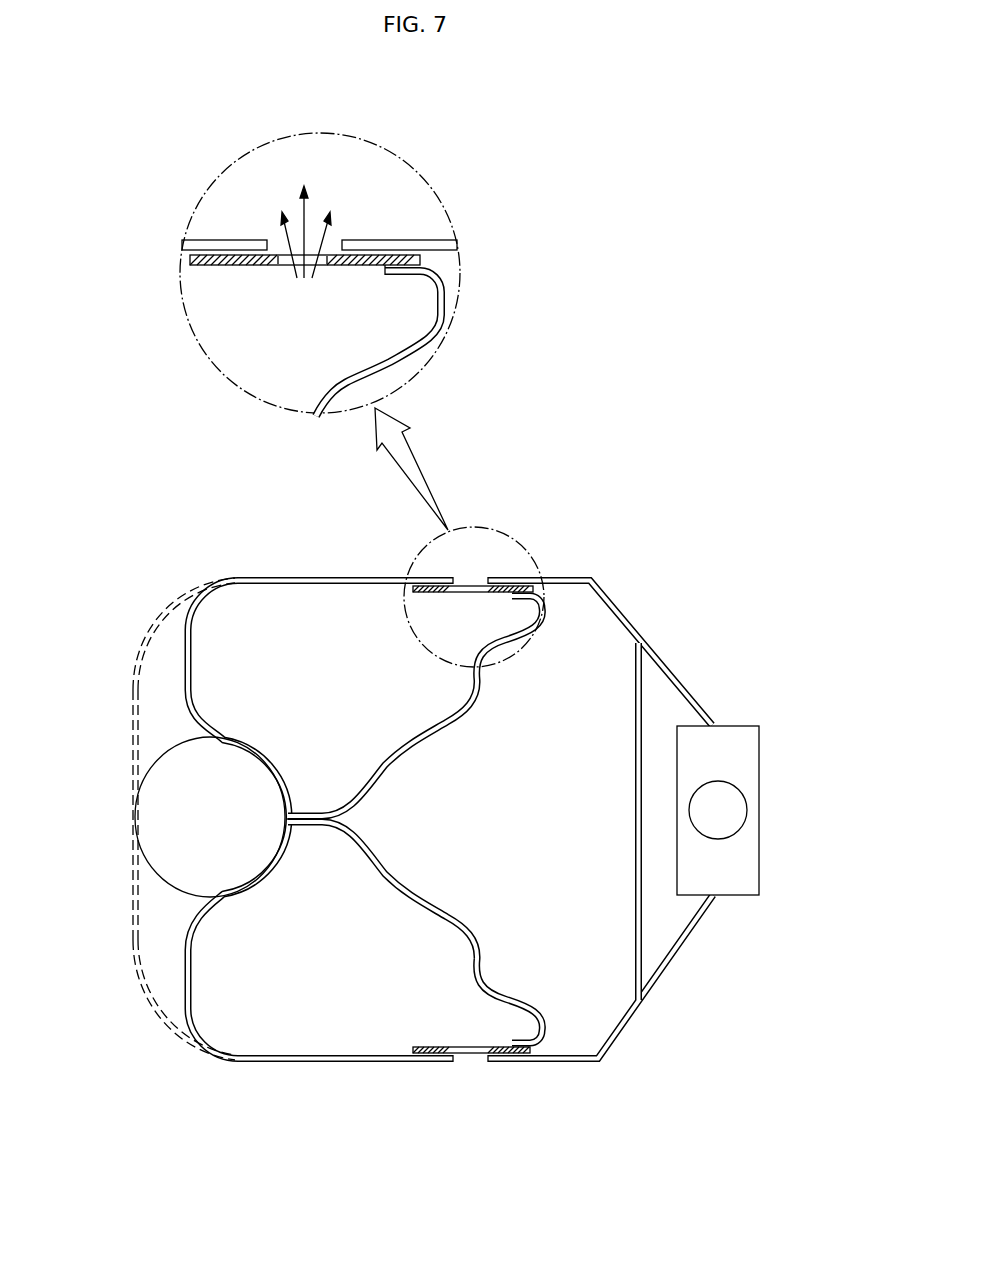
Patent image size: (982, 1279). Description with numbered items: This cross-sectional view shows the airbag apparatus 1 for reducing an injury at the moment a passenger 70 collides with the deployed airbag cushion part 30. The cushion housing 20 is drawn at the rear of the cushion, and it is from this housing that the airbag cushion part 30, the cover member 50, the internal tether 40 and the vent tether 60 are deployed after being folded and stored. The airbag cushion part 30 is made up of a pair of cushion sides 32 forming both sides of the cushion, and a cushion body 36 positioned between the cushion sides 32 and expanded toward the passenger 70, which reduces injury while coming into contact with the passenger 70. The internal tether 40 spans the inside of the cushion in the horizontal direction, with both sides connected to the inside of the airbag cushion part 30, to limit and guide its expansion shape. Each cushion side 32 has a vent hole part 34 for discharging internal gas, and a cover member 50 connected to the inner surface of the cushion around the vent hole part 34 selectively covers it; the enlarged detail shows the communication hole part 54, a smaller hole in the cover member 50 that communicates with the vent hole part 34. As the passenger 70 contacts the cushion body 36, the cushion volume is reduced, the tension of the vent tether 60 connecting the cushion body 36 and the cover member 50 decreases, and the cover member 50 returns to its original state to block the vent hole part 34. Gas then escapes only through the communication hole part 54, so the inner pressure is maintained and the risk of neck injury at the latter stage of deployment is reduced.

The airbag apparatus for reducing an injury 1 is at (586, 482).
The cushion housing 20 is at (759, 757).
The airbag cushion part 30 is at (272, 556).
The cushion sides 32 is at (403, 240).
The vent hole part 34 is at (333, 241).
The cushion body 36 is at (283, 802).
The internal tether 40 is at (642, 688).
The cover member 50 is at (217, 266).
The communication hole part 54 is at (285, 267).
The vent tether 60 is at (358, 838).
The passenger 70 is at (167, 817).